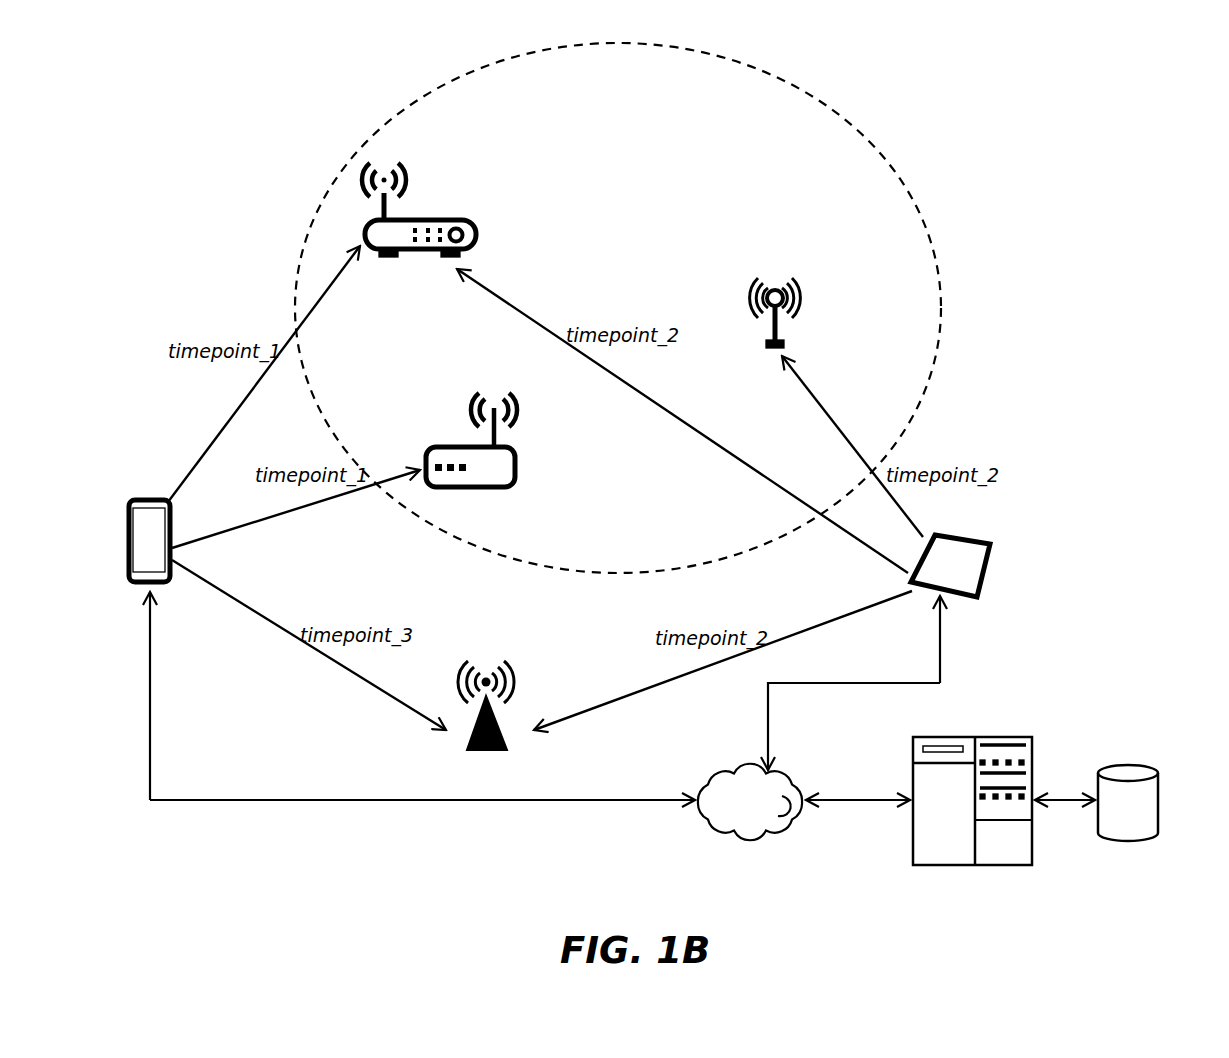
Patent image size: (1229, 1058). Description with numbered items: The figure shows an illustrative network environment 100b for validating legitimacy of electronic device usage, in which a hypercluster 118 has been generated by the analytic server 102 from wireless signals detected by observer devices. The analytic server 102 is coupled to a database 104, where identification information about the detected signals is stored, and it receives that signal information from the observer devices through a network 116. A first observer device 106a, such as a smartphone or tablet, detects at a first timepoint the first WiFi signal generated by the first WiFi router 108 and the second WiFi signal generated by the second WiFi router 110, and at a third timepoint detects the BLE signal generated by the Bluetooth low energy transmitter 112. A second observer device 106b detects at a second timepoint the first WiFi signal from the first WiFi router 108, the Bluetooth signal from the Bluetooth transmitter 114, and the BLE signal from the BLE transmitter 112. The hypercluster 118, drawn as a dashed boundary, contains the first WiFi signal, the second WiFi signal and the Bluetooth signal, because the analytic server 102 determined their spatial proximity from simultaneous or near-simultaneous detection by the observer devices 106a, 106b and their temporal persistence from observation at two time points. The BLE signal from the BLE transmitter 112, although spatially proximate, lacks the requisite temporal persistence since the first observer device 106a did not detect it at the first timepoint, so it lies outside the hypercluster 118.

The network environment 100b is at (1110, 97).
The analytic server 102 is at (1030, 765).
The database 104 is at (1145, 770).
The first observer device 106a is at (165, 522).
The second observer device 106b is at (988, 553).
The first WiFi router 108 is at (477, 232).
The second WiFi router 110 is at (517, 462).
The Bluetooth low energy (BLE) transmitter 112 is at (492, 752).
The Bluetooth transmitter 114 is at (806, 282).
The network 116 is at (750, 802).
The hypercluster 118 is at (937, 275).